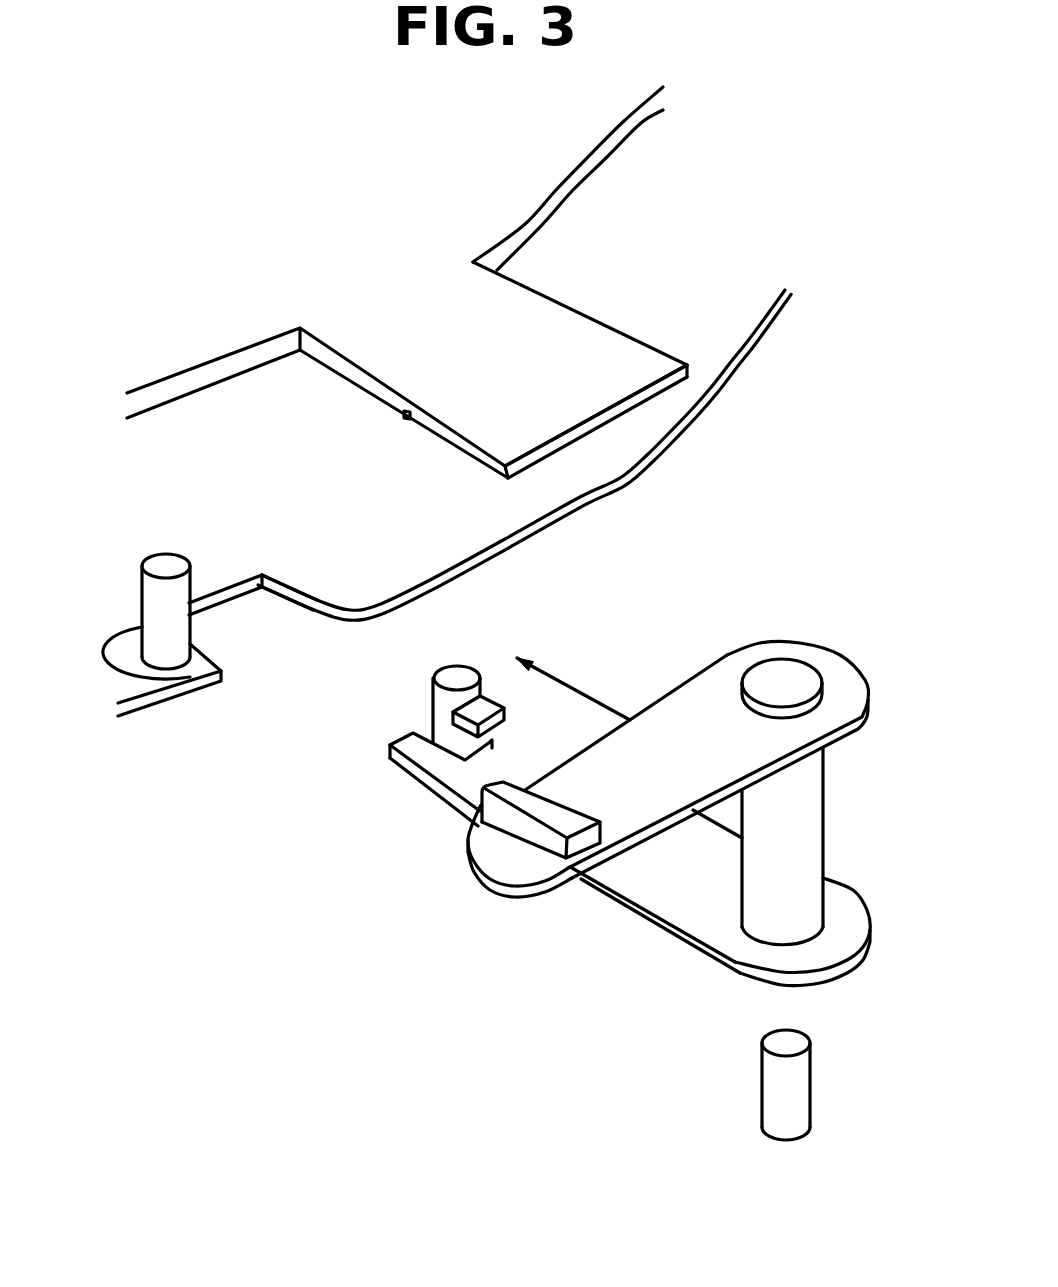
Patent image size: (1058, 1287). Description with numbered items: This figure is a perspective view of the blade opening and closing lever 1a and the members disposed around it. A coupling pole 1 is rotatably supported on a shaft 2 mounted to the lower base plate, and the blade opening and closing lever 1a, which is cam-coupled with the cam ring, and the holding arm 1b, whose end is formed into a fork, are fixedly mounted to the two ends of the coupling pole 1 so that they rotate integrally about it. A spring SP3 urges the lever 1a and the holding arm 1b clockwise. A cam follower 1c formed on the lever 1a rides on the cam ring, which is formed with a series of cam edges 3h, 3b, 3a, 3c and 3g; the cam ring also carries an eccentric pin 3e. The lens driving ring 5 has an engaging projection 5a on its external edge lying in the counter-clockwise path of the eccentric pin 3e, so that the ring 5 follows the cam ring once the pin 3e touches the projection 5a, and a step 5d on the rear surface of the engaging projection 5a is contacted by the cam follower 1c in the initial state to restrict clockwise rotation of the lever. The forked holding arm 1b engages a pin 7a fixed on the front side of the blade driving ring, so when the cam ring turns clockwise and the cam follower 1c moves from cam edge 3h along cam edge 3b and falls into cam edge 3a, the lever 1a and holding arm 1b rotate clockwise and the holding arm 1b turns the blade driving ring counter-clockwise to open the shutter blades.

The coupling pole 1 is at (825, 790).
The blade opening and closing lever 1a is at (687, 680).
The holding arm 1b is at (447, 797).
The cam follower 1c is at (490, 797).
The shaft 2 is at (757, 1078).
The cam edge 3a is at (223, 603).
The cam edge 3b is at (213, 657).
The cam edge 3c is at (307, 607).
The eccentric pin 3e is at (178, 553).
The cam edge 3g is at (484, 566).
The cam edge 3h is at (178, 697).
The lens driving ring 5 is at (582, 192).
The engaging projection 5a is at (602, 408).
The step 5d is at (410, 414).
The pin 7a is at (437, 702).
The spring SP3 is at (603, 700).